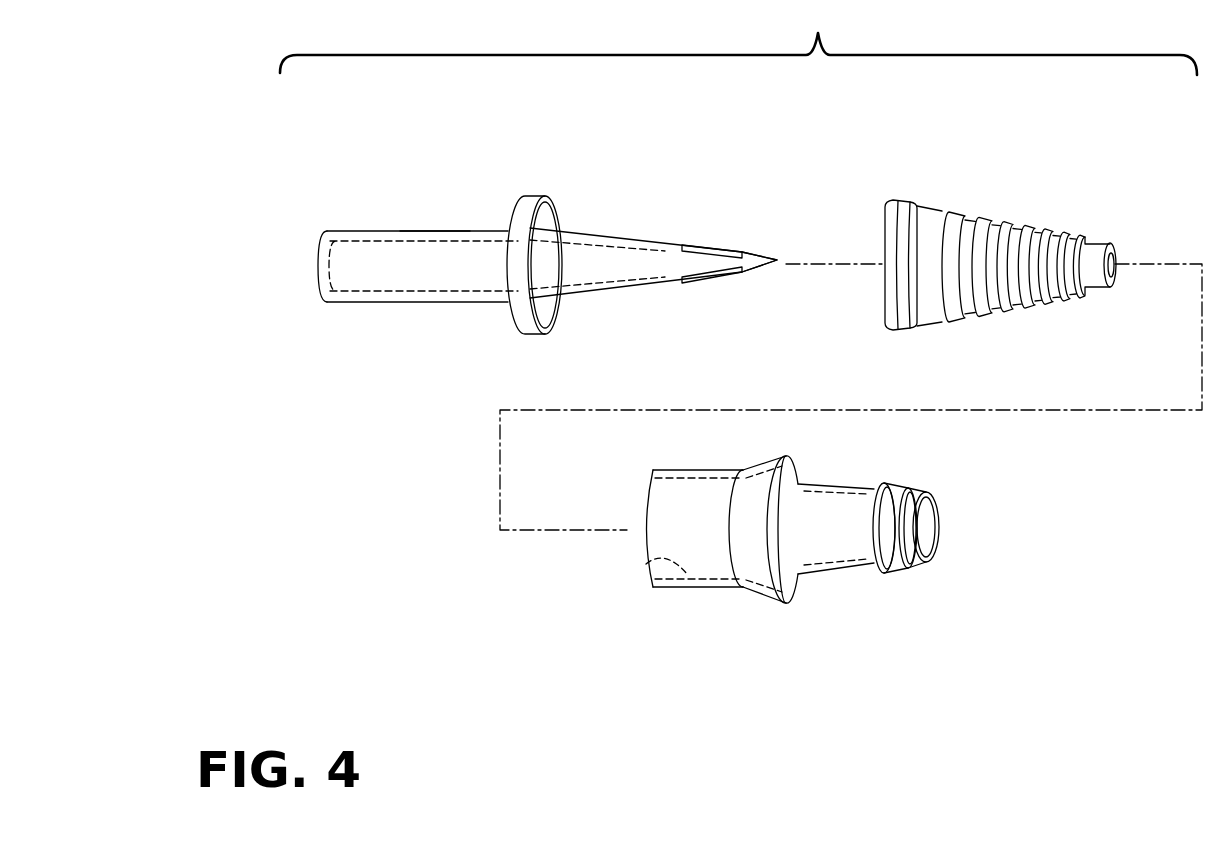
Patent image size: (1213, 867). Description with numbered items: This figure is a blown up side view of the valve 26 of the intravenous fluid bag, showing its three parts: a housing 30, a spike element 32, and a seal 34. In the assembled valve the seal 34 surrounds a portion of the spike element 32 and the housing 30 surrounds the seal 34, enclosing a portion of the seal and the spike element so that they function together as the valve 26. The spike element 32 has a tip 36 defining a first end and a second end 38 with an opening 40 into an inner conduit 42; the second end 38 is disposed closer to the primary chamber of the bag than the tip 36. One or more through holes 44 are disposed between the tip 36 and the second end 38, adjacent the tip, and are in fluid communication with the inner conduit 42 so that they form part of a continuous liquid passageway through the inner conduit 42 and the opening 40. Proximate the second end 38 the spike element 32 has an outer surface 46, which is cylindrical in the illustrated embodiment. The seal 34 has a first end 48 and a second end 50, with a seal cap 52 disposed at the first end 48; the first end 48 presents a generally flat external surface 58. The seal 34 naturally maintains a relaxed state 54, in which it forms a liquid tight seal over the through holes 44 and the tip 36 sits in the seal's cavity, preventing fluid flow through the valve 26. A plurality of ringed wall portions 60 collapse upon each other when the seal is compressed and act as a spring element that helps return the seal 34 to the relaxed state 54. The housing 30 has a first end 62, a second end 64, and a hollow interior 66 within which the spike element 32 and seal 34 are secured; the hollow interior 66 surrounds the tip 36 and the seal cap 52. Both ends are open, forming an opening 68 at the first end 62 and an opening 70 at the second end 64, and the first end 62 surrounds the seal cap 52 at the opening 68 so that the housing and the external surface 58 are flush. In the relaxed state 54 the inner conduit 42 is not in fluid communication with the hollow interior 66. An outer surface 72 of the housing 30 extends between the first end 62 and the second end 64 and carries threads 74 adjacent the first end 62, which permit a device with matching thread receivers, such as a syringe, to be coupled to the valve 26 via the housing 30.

The valve 26 is at (738, 40).
The housing 30 is at (703, 594).
The spike element 32 is at (393, 230).
The seal 34 is at (902, 197).
The tip 36 is at (777, 261).
The second end 38 is at (323, 233).
The opening 40 is at (313, 266).
The inner conduit 42 is at (385, 293).
The through holes 44 is at (690, 272).
The outer surface 46 is at (450, 238).
The first end 48 is at (1115, 283).
The second end 50 is at (884, 246).
The seal cap 52 is at (1096, 254).
The relaxed state 54 is at (982, 200).
The external surface 58 is at (1115, 263).
The ringed wall portions 60 is at (1005, 302).
The first end 62 is at (926, 492).
The second end 64 is at (646, 574).
The hollow interior 66 is at (640, 566).
The opening 68 is at (930, 527).
The opening 70 is at (628, 540).
The outer surface 72 is at (848, 548).
The threads 74 is at (916, 566).